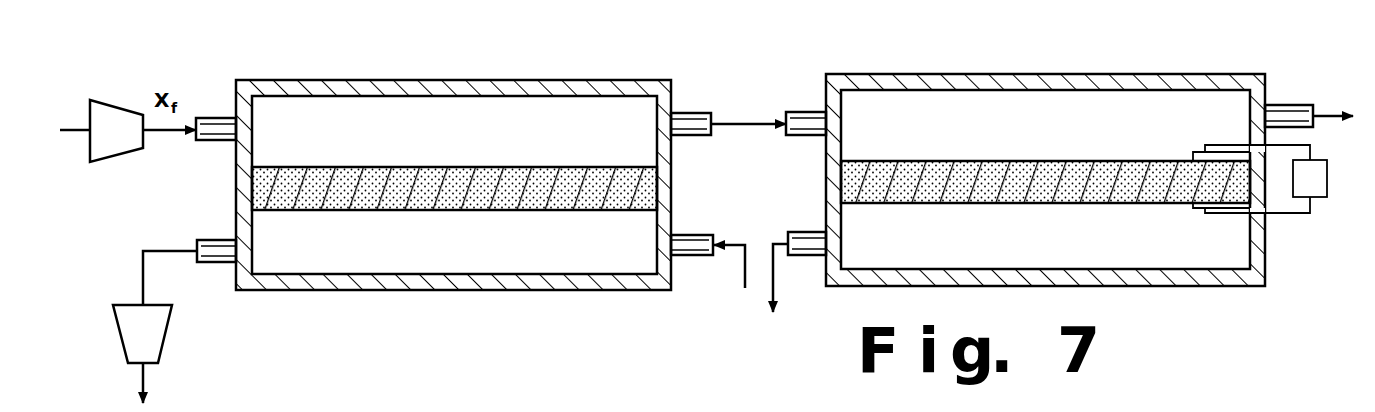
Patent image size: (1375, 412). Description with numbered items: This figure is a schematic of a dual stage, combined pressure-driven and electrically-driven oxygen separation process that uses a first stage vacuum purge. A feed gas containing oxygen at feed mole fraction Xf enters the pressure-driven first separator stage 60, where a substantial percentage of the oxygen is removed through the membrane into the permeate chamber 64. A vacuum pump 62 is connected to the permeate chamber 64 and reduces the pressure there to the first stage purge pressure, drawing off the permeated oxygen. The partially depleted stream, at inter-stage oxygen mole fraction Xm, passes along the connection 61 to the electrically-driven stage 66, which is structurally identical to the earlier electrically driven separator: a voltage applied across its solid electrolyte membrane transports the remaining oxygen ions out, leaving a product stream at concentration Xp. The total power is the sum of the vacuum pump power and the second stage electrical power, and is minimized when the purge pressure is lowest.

The pressure-driven first separator stage 60 is at (626, 71).
The connecting conduit 61 is at (773, 52).
The vacuum pump 62 is at (155, 338).
The permeate chamber 64 is at (515, 228).
The electrically-driven stage 66 is at (1181, 61).